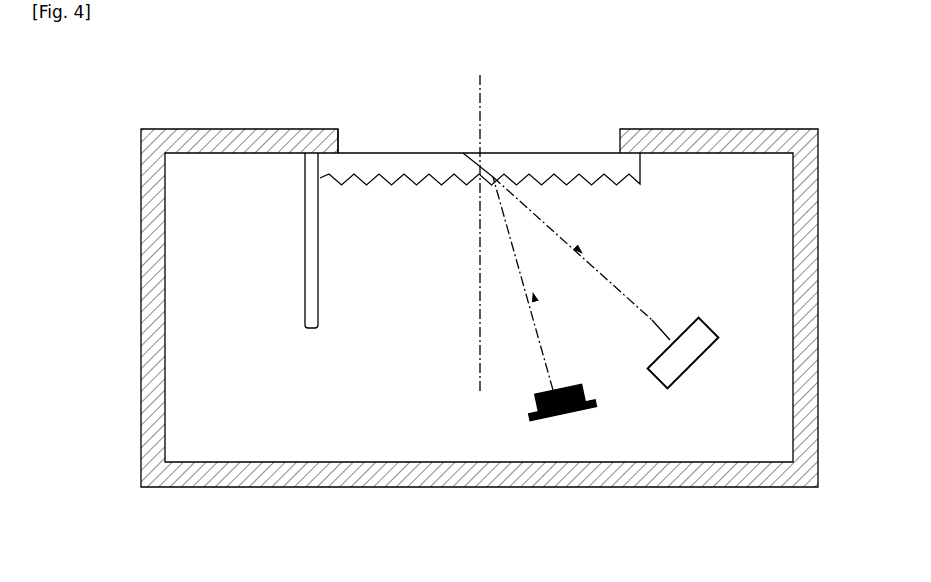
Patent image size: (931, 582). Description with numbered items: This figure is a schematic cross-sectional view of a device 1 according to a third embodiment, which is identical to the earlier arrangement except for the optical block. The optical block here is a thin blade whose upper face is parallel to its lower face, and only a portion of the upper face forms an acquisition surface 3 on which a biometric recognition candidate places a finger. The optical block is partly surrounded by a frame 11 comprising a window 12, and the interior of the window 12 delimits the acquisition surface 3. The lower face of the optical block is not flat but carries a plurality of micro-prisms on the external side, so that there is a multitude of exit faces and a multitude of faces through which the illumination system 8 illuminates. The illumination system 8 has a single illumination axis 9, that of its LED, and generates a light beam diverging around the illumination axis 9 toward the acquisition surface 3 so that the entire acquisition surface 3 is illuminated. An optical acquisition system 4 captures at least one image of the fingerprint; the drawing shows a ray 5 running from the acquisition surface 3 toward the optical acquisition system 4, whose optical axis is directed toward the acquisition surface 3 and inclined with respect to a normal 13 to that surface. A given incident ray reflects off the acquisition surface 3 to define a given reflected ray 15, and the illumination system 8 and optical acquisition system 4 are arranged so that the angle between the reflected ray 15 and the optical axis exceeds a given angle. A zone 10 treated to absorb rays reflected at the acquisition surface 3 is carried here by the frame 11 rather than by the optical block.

The device 1 is at (108, 286).
The acquisition surface 3 is at (579, 152).
The optical acquisition system 4 is at (690, 360).
The diffracted light 5 is at (652, 320).
The illumination system 8 is at (577, 414).
The illumination axis 9 is at (550, 360).
The zone treated to absorb light rays 10 is at (306, 240).
The frame 11 is at (152, 171).
The window 12 is at (338, 140).
The normal 13 is at (483, 92).
The given reflected ray 15 is at (464, 153).